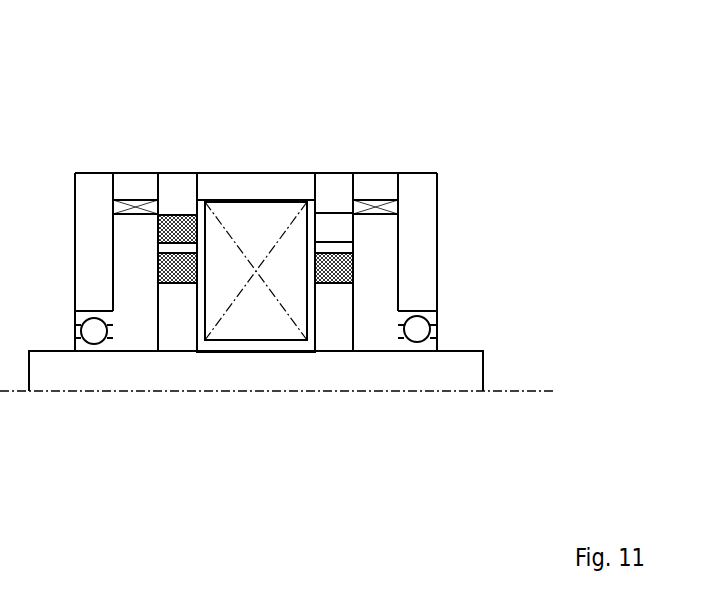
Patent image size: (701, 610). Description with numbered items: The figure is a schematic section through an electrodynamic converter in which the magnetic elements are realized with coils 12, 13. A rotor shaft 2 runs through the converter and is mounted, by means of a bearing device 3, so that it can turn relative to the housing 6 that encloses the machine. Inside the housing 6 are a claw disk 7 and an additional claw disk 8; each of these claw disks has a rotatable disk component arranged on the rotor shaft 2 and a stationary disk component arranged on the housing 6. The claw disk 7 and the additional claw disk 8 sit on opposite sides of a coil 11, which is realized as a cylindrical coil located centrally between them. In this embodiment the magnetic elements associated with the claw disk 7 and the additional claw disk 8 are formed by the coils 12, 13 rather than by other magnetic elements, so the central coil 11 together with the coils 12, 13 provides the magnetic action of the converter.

The rotor shaft 2 is at (467, 372).
The bearing device 3 is at (432, 327).
The housing 6 is at (415, 254).
The claw disk 7 is at (178, 185).
The additional claw disk 8 is at (331, 190).
The coil 11 is at (265, 317).
The coil 12 is at (140, 208).
The coil 13 is at (367, 208).